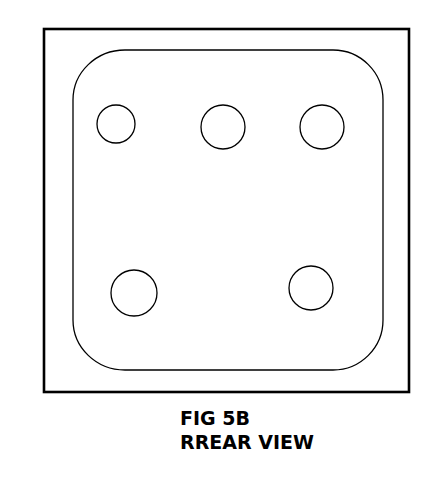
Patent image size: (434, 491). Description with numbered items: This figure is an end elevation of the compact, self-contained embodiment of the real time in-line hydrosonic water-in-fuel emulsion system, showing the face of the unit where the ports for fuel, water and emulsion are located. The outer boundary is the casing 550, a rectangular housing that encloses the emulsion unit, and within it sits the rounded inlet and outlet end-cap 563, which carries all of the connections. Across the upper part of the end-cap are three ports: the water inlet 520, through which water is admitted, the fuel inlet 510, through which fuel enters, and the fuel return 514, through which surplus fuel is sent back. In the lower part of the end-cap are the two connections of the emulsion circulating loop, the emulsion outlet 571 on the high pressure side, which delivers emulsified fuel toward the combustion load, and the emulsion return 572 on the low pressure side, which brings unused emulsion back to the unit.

The casing 550 is at (143, 393).
The inlet and outlet end-cap 563 is at (255, 216).
The water inlet 520 is at (116, 105).
The fuel inlet 510 is at (222, 105).
The fuel return 514 is at (320, 105).
The emulsion outlet 571 is at (132, 270).
The emulsion return 572 is at (311, 267).